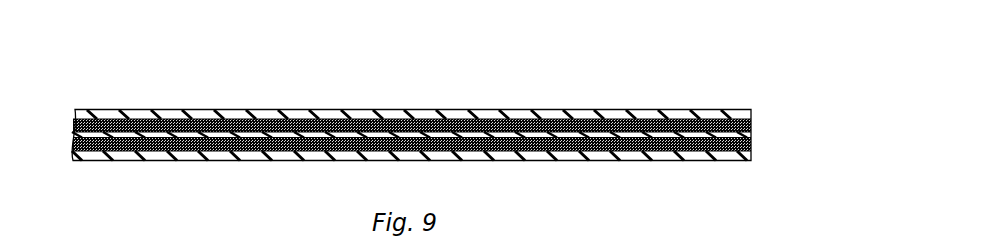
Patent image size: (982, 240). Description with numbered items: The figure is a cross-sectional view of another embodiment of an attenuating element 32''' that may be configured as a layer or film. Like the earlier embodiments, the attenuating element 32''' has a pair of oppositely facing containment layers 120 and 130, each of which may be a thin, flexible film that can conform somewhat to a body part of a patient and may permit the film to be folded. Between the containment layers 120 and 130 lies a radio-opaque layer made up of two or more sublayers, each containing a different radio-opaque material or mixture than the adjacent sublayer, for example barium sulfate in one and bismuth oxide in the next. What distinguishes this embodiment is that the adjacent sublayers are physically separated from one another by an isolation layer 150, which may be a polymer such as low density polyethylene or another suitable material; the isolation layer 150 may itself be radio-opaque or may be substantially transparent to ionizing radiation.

The attenuating element 32''' is at (455, 112).
The containment layer 120 is at (752, 110).
The containment layer 130 is at (751, 161).
The isolation layer 150 is at (567, 161).